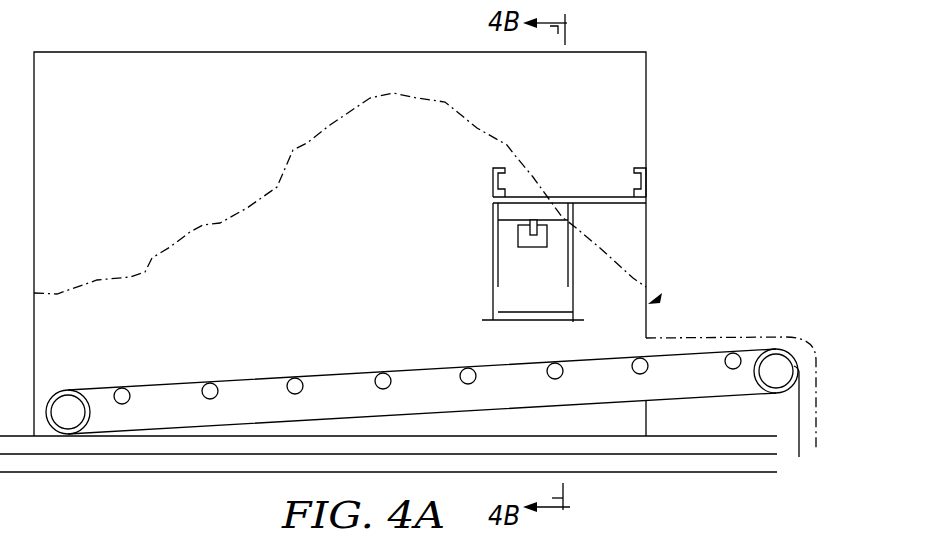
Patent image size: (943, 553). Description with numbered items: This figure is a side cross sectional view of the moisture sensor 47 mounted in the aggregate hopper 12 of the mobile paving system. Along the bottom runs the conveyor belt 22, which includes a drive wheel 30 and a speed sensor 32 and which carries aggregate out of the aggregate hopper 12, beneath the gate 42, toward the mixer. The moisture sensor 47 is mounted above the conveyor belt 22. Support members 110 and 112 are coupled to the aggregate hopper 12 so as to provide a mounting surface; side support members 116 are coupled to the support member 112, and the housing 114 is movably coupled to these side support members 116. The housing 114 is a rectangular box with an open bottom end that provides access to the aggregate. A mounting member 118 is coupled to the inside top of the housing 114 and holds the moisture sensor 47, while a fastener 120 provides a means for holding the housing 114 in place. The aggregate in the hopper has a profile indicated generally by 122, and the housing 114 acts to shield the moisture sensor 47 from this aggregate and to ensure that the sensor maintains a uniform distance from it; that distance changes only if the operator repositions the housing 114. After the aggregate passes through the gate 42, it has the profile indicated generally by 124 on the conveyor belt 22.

The aggregate hopper 12 is at (102, 111).
The conveyor belt 22 is at (186, 372).
The drive wheel 30 is at (780, 366).
The speed sensor 32 is at (69, 400).
The gate 42 is at (658, 299).
The moisture sensor 47 is at (534, 248).
The support member 110 is at (493, 177).
The support member 112 is at (588, 197).
The housing 114 is at (577, 300).
The side support member 116 is at (575, 220).
The mounting member 118 is at (533, 220).
The fastener 120 is at (582, 249).
The aggregate profile 122 is at (197, 227).
The aggregate profile after gate 124 is at (750, 333).